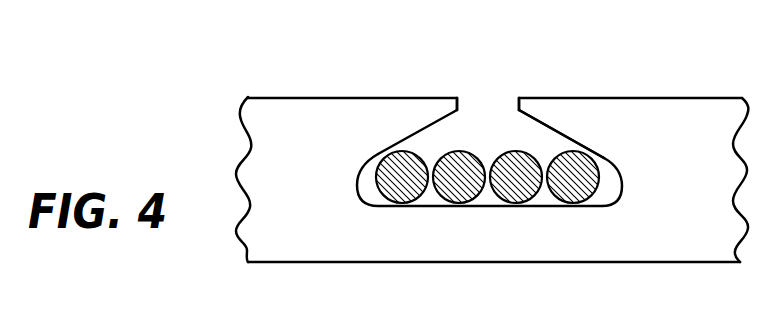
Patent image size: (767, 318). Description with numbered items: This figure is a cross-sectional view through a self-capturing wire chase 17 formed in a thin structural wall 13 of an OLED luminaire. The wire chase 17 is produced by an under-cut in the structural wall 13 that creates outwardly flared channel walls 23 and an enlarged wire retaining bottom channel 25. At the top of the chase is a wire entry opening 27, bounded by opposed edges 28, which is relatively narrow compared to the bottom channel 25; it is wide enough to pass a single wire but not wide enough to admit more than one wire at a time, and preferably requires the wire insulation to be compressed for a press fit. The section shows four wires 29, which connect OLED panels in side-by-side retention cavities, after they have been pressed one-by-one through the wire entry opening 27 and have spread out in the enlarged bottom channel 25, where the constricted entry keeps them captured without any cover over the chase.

The structural wall 13 is at (648, 240).
The self-capturing wire chase 17 is at (537, 138).
The outwardly flared channel walls 23 is at (380, 152).
The enlarged wire retaining bottom channel 25 is at (365, 190).
The wire entry opening 27 is at (485, 113).
The opposed edges of wire entry opening 28 is at (458, 98).
The wires 29 is at (404, 181).